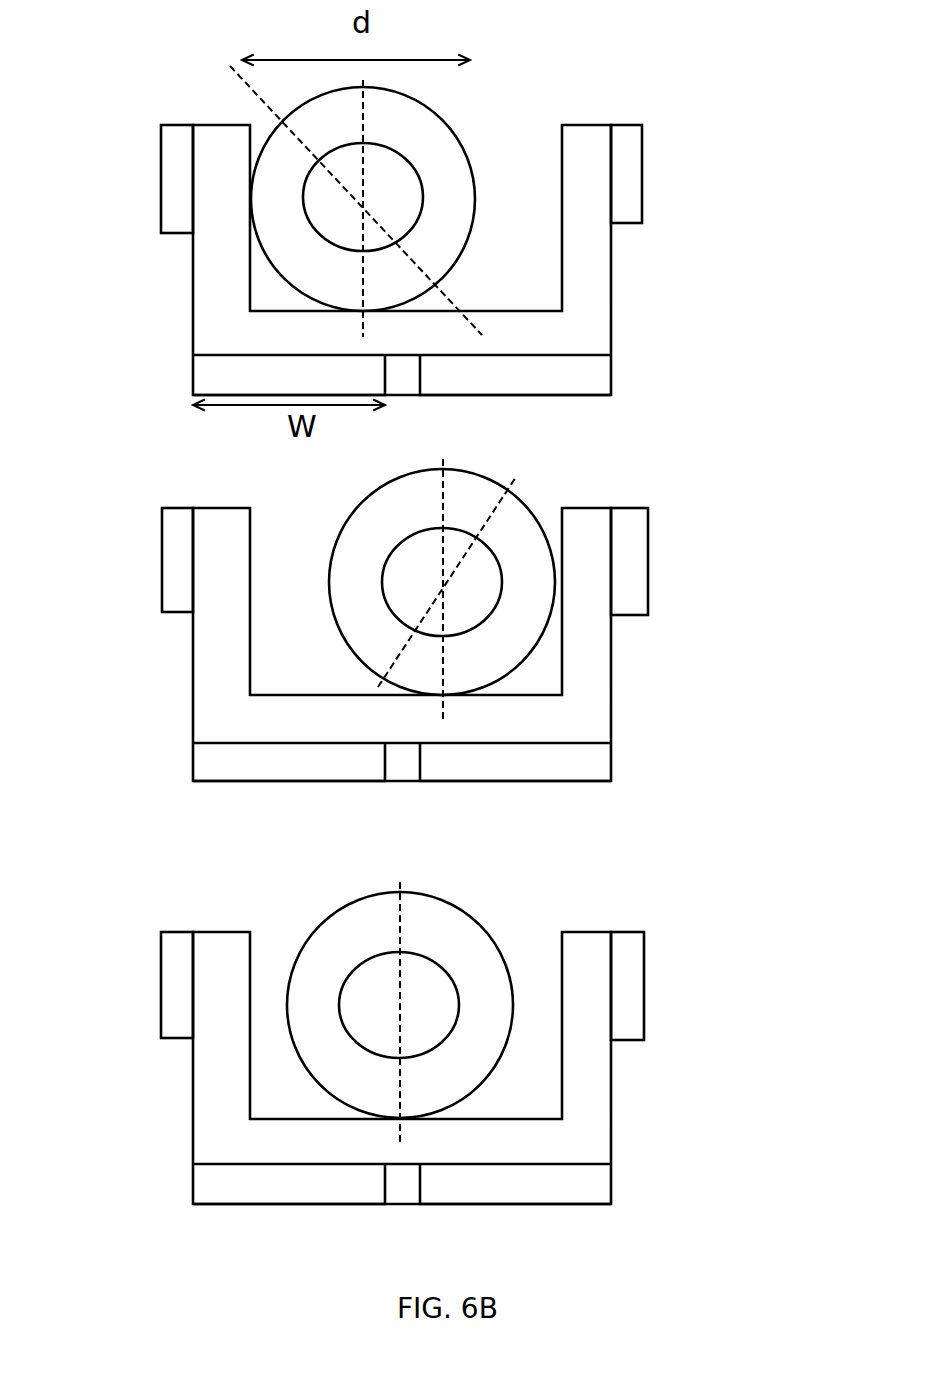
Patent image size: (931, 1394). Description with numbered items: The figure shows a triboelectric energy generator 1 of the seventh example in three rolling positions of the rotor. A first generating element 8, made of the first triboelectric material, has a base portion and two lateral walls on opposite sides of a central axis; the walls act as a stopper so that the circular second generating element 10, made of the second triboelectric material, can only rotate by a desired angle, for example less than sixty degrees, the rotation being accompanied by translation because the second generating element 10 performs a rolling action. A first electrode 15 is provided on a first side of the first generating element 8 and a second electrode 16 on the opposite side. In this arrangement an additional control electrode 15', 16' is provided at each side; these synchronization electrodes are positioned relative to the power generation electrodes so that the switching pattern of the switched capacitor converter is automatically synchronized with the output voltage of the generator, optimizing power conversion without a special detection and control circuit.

The triboelectric energy generator 1 is at (192, 97).
The first generating element 8 is at (578, 325).
The second generating element 10 is at (462, 142).
The first electrode 15 is at (584, 827).
The control electrode 15' is at (701, 582).
The second electrode 16 is at (213, 779).
The control electrode 16' is at (116, 581).